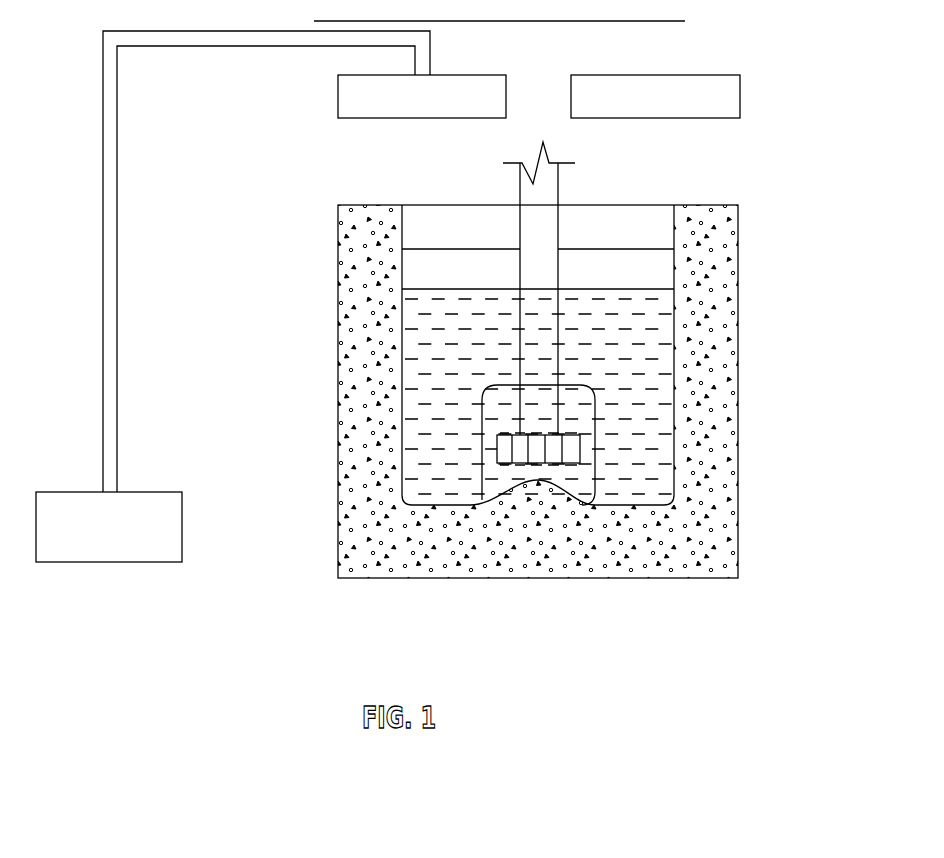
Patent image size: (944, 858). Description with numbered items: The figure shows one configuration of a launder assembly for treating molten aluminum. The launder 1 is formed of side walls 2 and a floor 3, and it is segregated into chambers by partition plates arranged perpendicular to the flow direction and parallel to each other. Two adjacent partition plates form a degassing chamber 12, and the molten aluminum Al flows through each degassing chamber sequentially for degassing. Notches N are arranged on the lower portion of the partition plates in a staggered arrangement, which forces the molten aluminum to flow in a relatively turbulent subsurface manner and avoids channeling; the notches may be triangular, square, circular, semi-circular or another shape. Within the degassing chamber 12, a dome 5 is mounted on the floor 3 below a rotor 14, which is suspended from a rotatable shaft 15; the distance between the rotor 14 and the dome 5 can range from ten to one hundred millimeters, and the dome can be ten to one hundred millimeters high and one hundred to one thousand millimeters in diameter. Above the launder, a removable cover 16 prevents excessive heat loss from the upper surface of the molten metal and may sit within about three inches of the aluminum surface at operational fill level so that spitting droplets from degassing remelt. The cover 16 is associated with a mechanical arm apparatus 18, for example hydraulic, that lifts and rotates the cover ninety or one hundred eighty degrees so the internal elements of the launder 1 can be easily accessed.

The launder 1 is at (418, 173).
The side walls 2 is at (370, 298).
The floor 3 is at (660, 565).
The dome 5 is at (503, 493).
The degassing chamber 12 is at (615, 268).
The rotor 14 is at (580, 449).
The rotatable shaft 15 is at (545, 202).
The removable cover 16 is at (710, 90).
The mechanical arm apparatus 18 is at (76, 437).
The molten aluminum Al is at (438, 398).
The notches N is at (595, 473).